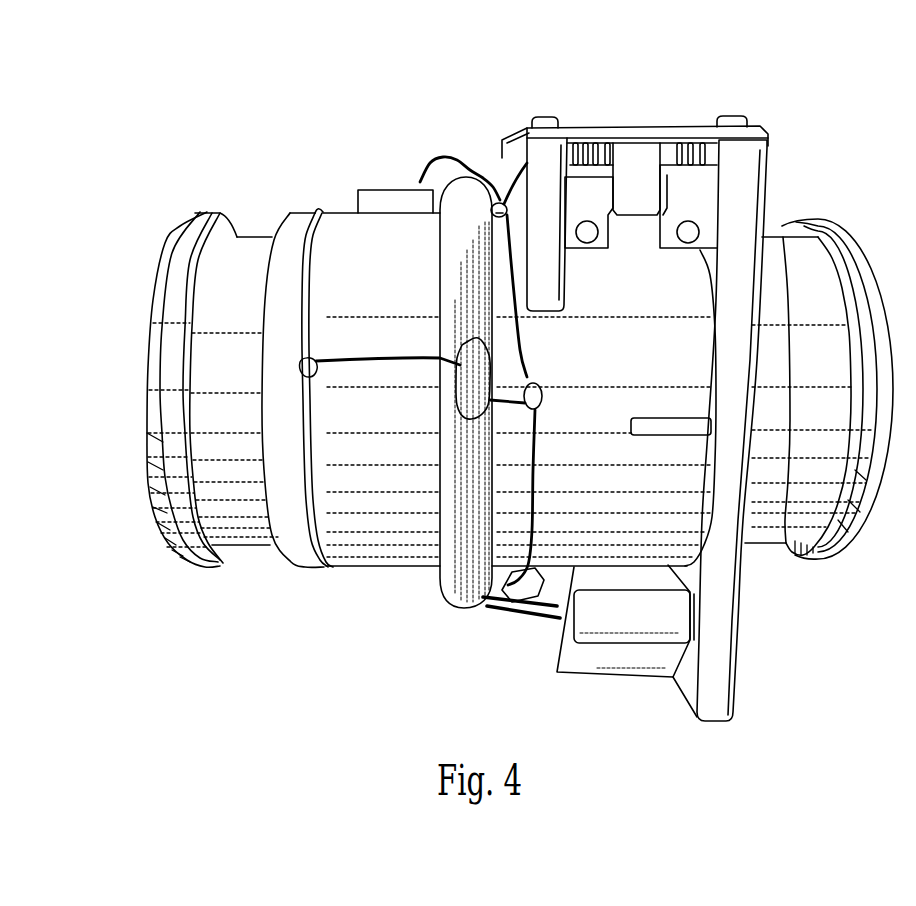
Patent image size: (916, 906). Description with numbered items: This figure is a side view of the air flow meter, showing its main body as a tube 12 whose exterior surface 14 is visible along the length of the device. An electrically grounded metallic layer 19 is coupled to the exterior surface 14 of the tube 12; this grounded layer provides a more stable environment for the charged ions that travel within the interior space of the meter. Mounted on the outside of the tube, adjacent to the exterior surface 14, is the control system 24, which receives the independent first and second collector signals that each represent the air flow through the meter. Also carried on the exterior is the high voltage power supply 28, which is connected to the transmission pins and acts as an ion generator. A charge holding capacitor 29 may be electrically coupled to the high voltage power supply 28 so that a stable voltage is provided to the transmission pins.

The tube 12 is at (146, 489).
The exterior surface 14 is at (210, 306).
The electrically grounded metallic layer 19 is at (354, 258).
The control system 24 is at (616, 122).
The high voltage power supply 28 is at (556, 638).
The charge holding capacitor 29 is at (522, 580).